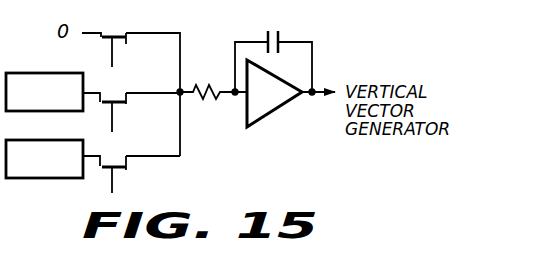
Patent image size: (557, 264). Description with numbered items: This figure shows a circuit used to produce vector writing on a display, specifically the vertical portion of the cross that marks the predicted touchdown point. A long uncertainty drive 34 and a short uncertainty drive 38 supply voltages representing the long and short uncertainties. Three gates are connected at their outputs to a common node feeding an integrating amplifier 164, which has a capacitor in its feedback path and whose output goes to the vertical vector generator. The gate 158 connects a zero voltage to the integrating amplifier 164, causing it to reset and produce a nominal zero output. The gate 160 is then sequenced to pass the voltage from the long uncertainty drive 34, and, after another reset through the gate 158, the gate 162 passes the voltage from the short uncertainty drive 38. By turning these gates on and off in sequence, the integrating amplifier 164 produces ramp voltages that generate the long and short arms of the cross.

The long uncertainty drive 34 is at (30, 73).
The short uncertainty drive 38 is at (24, 140).
The gate 158 is at (126, 44).
The gate 160 is at (126, 104).
The gate 162 is at (126, 170).
The integrating amplifier 164 is at (288, 103).